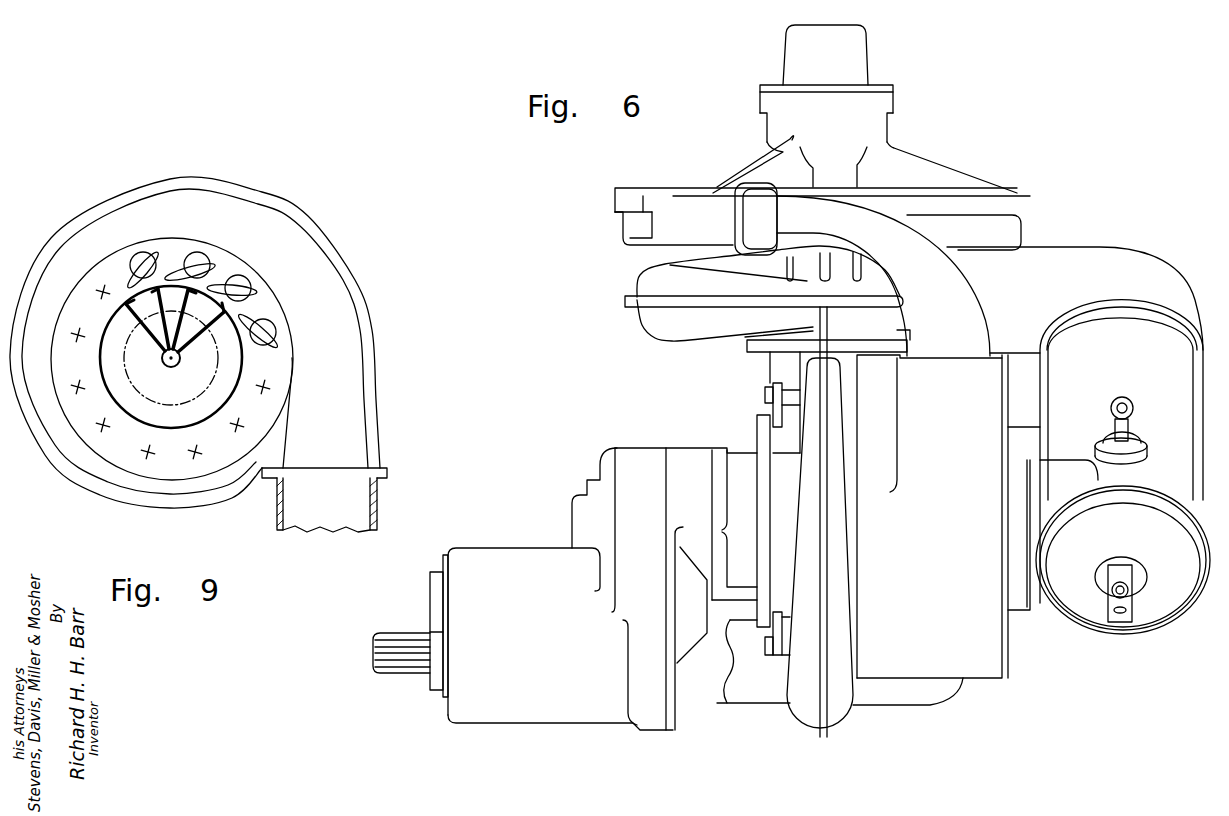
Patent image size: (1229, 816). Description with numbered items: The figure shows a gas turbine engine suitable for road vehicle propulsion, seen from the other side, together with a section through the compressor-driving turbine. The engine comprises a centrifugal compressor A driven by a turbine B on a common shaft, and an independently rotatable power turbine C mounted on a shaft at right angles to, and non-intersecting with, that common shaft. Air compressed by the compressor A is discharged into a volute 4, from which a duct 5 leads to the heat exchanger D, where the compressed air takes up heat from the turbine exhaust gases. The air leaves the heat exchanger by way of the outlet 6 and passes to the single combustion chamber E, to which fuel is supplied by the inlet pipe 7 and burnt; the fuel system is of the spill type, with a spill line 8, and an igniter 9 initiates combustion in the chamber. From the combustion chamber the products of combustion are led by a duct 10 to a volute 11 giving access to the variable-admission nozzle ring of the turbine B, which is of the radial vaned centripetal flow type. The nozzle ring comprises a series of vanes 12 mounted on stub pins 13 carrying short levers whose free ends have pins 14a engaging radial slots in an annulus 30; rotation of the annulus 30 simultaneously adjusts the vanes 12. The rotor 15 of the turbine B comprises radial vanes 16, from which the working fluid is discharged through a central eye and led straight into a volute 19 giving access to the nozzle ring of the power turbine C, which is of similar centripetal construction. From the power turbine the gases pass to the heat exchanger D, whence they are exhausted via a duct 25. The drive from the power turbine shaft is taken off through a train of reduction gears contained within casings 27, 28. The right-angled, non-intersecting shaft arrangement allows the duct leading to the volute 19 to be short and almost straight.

In FIG. 6, the volute 4 is at (688, 196).
In FIG. 6, the duct 5 is at (921, 273).
In FIG. 6, the outlet 6 is at (1061, 492).
In FIG. 6, the inlet pipe 7 is at (1135, 590).
In FIG. 6, the spill line 8 is at (1121, 622).
In FIG. 6, the igniter 9 is at (1133, 422).
In FIG. 6, the duct 10 is at (1155, 268).
In FIG. 9, the duct 10 is at (363, 518).
In FIG. 6, the volute 11 is at (680, 328).
In FIG. 9, the volute 11 is at (347, 342).
In FIG. 9, the vanes 12 is at (162, 243).
In FIG. 9, the stub pins 13 is at (273, 328).
In FIG. 6, the pins 14a is at (772, 413).
In FIG. 9, the rotor 15 is at (147, 398).
In FIG. 9, the radial vanes 16 is at (212, 338).
In FIG. 6, the volute 19 is at (843, 722).
In FIG. 6, the duct 25 is at (940, 708).
In FIG. 6, the casing 27 is at (647, 460).
In FIG. 6, the casing 28 is at (544, 695).
In FIG. 6, the annulus 30 is at (760, 427).
In FIG. 6, the centrifugal compressor A is at (980, 178).
In FIG. 6, the turbine B is at (648, 326).
In FIG. 9, the turbine B is at (204, 180).
In FIG. 6, the power turbine C is at (818, 555).
In FIG. 6, the heat exchanger D is at (931, 625).
In FIG. 6, the combustion chamber E is at (1113, 354).